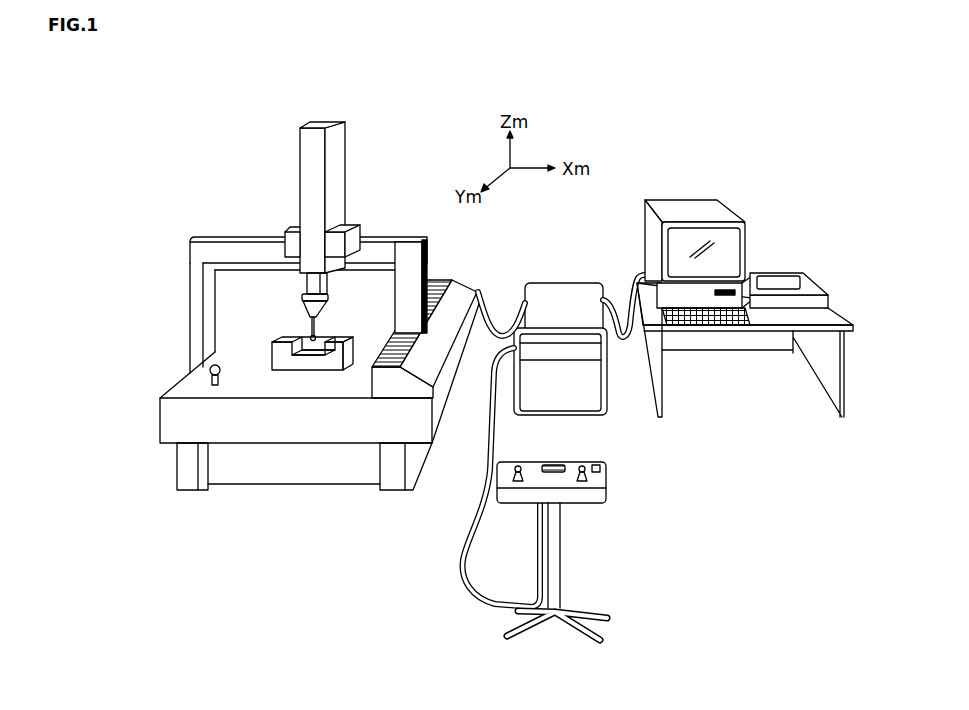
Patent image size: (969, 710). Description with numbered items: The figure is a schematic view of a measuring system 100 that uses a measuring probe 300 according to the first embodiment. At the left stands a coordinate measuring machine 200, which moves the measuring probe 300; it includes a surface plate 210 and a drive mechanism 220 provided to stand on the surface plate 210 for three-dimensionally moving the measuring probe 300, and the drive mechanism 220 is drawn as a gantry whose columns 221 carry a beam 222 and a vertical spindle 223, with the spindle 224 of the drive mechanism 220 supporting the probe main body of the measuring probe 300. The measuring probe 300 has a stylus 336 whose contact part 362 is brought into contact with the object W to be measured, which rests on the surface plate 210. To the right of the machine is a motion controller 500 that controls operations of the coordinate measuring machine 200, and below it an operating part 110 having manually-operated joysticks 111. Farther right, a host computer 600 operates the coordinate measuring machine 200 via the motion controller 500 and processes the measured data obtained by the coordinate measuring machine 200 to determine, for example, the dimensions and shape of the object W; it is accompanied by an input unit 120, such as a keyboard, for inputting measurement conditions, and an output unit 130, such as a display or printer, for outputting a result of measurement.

The measuring system 100 is at (666, 172).
The operating part 110 is at (610, 516).
The joysticks 111 is at (582, 467).
The input unit 120 is at (708, 324).
The output unit 130 is at (735, 243).
The coordinate measuring machine 200 is at (162, 196).
The surface plate 210 is at (165, 420).
The drive mechanism 220 is at (256, 210).
The columns 221 is at (197, 290).
The X beam 222 is at (224, 240).
The Z spindle 223 is at (318, 188).
The spindle 224 is at (307, 283).
The measuring probe 300 is at (328, 319).
The stylus 336 is at (308, 332).
The contact part 362 is at (320, 338).
The motion controller 500 is at (566, 290).
The host computer 600 is at (800, 250).
The object to be measured W is at (265, 360).